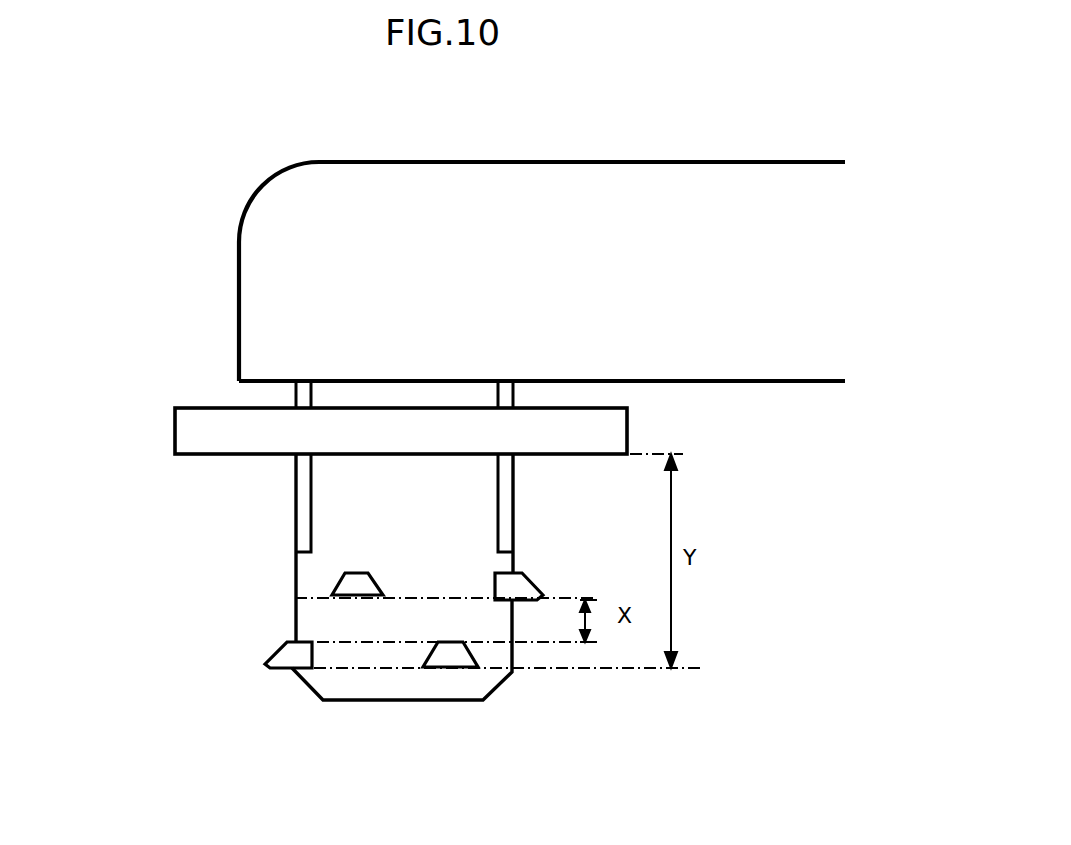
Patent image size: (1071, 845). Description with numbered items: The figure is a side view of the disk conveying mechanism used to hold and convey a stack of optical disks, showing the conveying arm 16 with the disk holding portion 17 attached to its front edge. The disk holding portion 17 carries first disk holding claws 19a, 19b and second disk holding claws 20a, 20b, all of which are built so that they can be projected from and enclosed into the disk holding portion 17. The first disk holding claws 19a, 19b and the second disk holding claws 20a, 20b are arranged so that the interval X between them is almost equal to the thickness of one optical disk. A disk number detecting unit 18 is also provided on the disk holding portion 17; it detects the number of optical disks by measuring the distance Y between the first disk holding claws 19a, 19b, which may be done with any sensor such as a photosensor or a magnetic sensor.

The conveying arm 16 is at (297, 220).
The disk number detecting unit 18 is at (208, 438).
The disk holding portion 17 is at (337, 510).
The second disk holding claw 20a is at (360, 580).
The second disk holding claw 20b is at (515, 585).
The first disk holding claw 19a is at (295, 657).
The first disk holding claw 19b is at (452, 653).